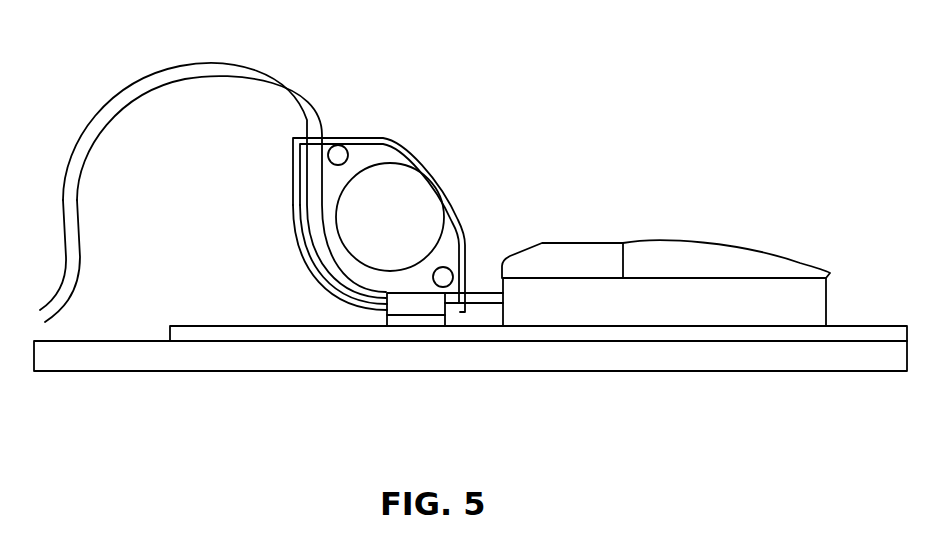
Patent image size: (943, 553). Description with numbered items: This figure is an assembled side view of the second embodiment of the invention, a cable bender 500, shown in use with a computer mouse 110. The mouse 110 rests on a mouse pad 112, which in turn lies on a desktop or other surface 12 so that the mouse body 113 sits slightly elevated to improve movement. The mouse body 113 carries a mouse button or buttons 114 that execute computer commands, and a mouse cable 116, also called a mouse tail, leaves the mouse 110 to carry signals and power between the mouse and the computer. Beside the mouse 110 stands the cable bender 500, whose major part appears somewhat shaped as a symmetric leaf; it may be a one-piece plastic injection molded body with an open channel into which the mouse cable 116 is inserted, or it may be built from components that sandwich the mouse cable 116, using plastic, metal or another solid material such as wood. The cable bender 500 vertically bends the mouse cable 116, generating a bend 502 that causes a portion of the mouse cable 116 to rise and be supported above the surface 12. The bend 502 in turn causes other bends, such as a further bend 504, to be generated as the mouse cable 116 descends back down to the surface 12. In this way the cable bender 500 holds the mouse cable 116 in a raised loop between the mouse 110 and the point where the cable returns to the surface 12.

The surface 12 is at (110, 342).
The computer mouse 110 is at (663, 230).
The mouse pad 112 is at (898, 328).
The mouse body 113 is at (757, 243).
The mouse button 114 is at (542, 243).
The mouse cable 116 is at (72, 256).
The cable bender 500 is at (392, 146).
The bend 502 is at (336, 265).
The bend 504 is at (192, 72).